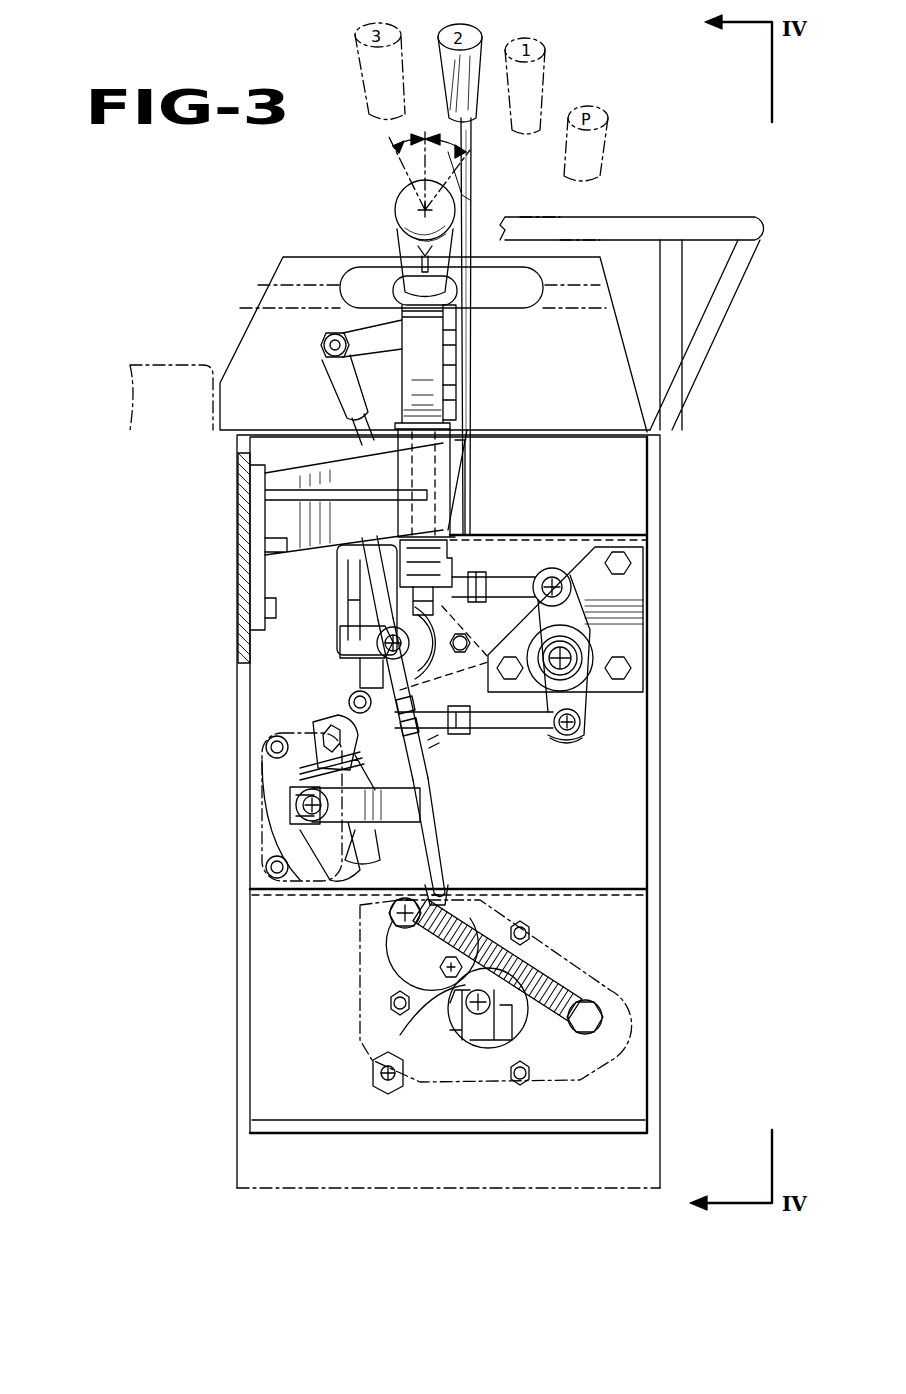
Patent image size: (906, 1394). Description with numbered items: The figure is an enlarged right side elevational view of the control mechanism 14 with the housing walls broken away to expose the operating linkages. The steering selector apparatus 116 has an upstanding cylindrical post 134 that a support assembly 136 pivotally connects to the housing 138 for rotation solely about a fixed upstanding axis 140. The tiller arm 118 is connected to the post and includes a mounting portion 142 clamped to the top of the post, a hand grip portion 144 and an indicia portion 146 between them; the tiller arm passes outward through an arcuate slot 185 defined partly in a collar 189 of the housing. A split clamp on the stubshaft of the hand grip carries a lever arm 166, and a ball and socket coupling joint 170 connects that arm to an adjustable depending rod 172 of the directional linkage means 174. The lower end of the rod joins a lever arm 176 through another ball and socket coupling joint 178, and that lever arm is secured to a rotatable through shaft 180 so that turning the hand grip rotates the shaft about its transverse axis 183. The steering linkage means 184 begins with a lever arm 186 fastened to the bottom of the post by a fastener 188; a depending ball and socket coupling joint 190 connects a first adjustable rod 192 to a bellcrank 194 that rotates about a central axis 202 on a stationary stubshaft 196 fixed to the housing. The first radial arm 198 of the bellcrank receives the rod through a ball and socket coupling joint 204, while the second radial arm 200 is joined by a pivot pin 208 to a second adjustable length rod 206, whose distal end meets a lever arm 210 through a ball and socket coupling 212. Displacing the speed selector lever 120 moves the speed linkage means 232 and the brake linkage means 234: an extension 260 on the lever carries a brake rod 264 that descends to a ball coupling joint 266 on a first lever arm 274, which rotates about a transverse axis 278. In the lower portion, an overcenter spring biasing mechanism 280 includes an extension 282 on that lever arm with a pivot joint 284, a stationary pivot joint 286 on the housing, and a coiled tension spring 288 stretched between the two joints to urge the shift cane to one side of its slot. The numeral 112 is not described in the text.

The control mechanism 14 is at (263, 232).
The vehicle body panel 112 is at (205, 365).
The steering selector apparatus 116 is at (452, 366).
The tiller arm 118 is at (405, 198).
The speed selector lever 120 is at (470, 200).
The cylindrical post 134 is at (466, 444).
The support assembly 136 is at (324, 458).
The housing 138 is at (238, 505).
The fixed upstanding axis 140 is at (455, 470).
The mounting portion 142 is at (446, 338).
The hand grip portion 144 is at (437, 254).
The indicia portion 146 is at (457, 292).
The lever arm 166 is at (365, 330).
The ball and socket coupling joint 170 is at (323, 350).
The depending rod 172 is at (376, 542).
The directional linkage means 174 is at (408, 782).
The lever arm 176 is at (378, 830).
The ball and socket coupling joint 178 is at (432, 808).
The through shaft 180 is at (296, 812).
The transverse axis 183 is at (296, 800).
The steering linkage means 184 is at (290, 775).
The arcuate slot 185 is at (378, 268).
The lever arm 186 is at (430, 556).
The fastener 188 is at (458, 577).
The collar 189 is at (252, 308).
The ball and socket coupling joint 190 is at (410, 580).
The first adjustable rod 192 is at (528, 585).
The bellcrank 194 is at (602, 628).
The stationary stubshaft 196 is at (600, 690).
The first radial arm 198 is at (583, 603).
The second radial arm 200 is at (583, 712).
The central axis 202 is at (575, 655).
The ball and socket coupling joint 204 is at (562, 587).
The second adjustable length rod 206 is at (526, 732).
The pivot pin 208 is at (580, 740).
The lever arm 210 is at (336, 758).
The ball and socket coupling 212 is at (330, 728).
The speed linkage means 232 is at (350, 681).
The brake linkage means 234 is at (400, 964).
The extension 260 is at (340, 639).
The brake rod 264 is at (440, 848).
The ball coupling joint 266 is at (412, 975).
The first lever arm 274 is at (445, 1000).
The transverse axis 278 is at (496, 1012).
The overcenter spring biasing mechanism 280 is at (532, 955).
The extension 282 is at (400, 942).
The pivot joint 284 is at (390, 912).
The stationary pivot joint 286 is at (585, 1036).
The coiled tension spring 288 is at (462, 925).